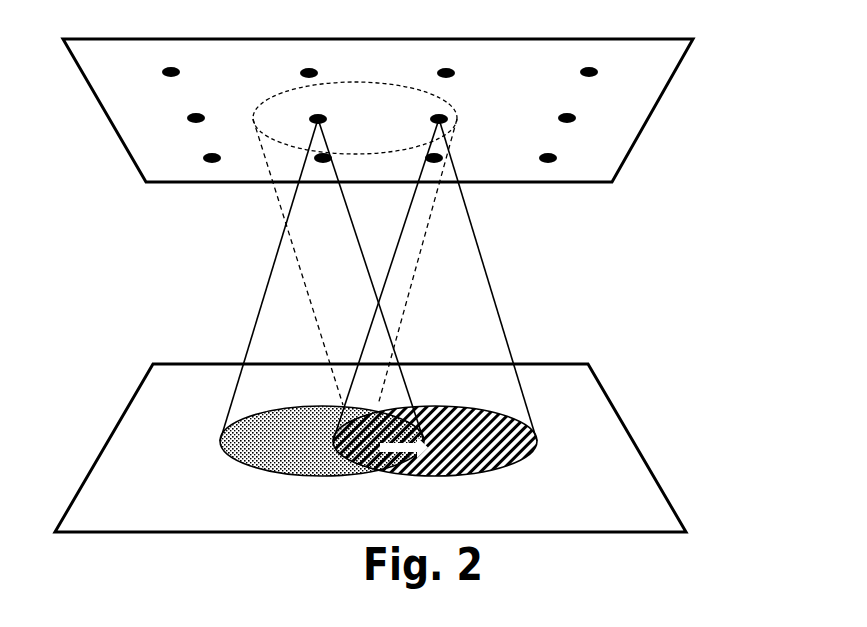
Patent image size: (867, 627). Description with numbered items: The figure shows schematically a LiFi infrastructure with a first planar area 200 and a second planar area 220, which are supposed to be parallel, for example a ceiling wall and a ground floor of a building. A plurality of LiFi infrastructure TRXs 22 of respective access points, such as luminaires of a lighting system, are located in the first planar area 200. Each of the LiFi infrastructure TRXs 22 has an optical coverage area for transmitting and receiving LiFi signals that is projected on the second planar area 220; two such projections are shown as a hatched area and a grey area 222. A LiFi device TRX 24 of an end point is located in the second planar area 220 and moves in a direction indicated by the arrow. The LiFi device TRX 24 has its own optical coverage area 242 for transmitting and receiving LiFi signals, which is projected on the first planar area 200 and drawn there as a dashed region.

The first planar area 200 is at (668, 85).
The LiFi infrastructure TRXs 22 is at (572, 121).
The optical coverage area 242 is at (253, 119).
The grey area 222 is at (218, 436).
The LiFi device TRX 24 is at (467, 407).
The second planar area 220 is at (640, 448).